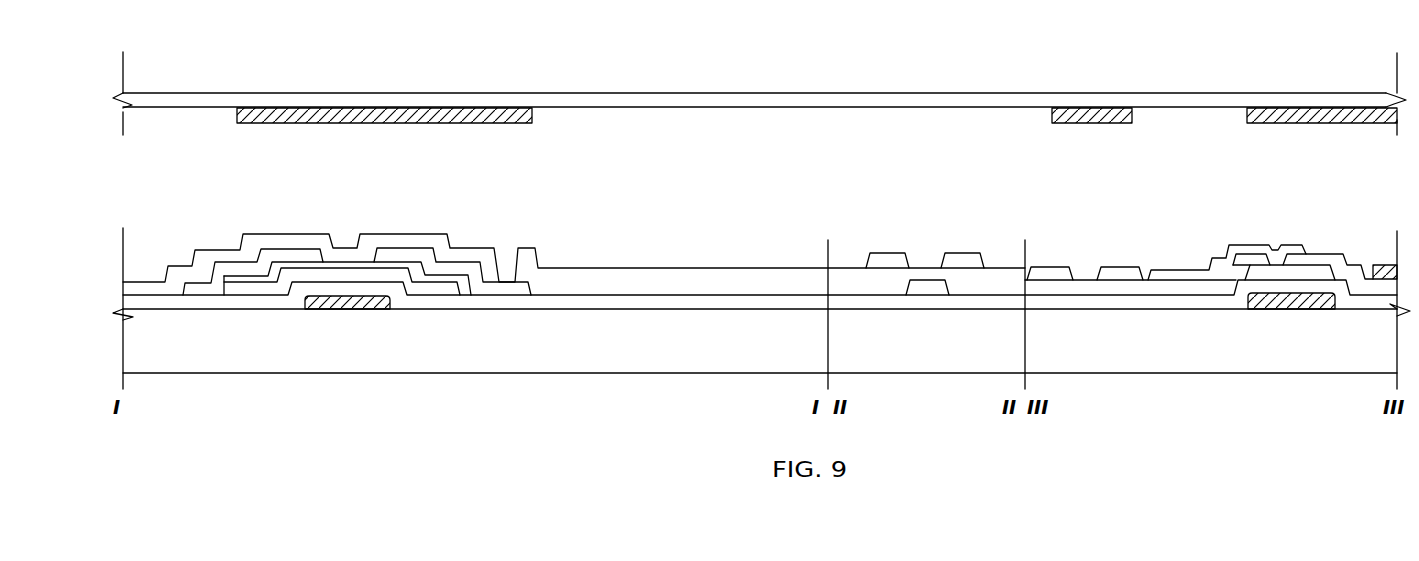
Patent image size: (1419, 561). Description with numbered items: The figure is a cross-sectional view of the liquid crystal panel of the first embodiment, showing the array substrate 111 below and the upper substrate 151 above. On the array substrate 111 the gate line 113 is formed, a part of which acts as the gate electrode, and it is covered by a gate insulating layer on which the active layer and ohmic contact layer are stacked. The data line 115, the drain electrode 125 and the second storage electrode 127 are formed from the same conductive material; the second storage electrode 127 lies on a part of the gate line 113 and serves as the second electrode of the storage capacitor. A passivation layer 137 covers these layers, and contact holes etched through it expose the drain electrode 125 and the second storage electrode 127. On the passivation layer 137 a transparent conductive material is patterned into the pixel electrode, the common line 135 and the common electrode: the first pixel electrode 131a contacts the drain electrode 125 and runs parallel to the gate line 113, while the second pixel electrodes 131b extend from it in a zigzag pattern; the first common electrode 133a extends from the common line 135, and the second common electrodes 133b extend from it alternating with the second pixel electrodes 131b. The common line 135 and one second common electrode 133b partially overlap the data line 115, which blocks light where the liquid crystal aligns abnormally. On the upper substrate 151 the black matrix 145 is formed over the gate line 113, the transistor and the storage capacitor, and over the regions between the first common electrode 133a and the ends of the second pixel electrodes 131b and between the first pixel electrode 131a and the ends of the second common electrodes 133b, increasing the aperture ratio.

The array substrate 111 is at (711, 343).
The gate line 113 is at (1294, 312).
The data line 115 is at (925, 287).
The drain electrode 125 is at (392, 248).
The second storage electrode 127 is at (1303, 272).
The first pixel electrode 131a is at (1058, 267).
The second pixel electrodes 131b is at (1257, 254).
The first common electrode 133a is at (1382, 265).
The second common electrodes 133b is at (955, 255).
The common line 135 is at (893, 253).
The passivation layer 137 is at (295, 235).
The black matrix 145 is at (510, 112).
The upper substrate 151 is at (780, 100).